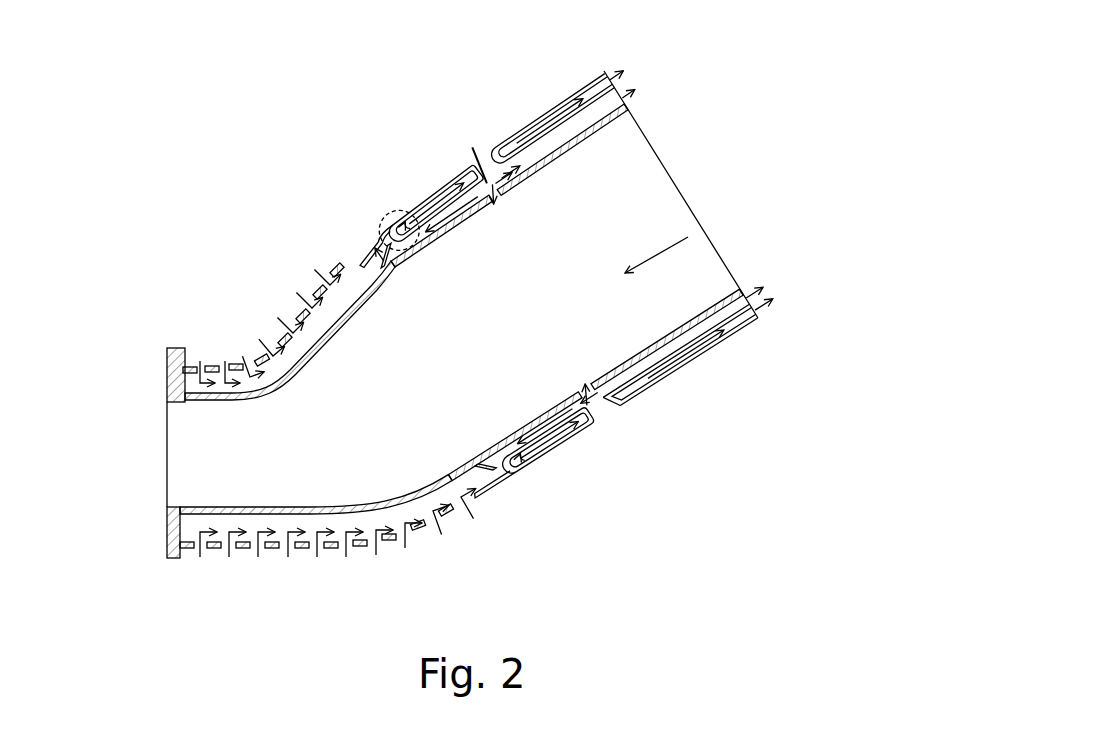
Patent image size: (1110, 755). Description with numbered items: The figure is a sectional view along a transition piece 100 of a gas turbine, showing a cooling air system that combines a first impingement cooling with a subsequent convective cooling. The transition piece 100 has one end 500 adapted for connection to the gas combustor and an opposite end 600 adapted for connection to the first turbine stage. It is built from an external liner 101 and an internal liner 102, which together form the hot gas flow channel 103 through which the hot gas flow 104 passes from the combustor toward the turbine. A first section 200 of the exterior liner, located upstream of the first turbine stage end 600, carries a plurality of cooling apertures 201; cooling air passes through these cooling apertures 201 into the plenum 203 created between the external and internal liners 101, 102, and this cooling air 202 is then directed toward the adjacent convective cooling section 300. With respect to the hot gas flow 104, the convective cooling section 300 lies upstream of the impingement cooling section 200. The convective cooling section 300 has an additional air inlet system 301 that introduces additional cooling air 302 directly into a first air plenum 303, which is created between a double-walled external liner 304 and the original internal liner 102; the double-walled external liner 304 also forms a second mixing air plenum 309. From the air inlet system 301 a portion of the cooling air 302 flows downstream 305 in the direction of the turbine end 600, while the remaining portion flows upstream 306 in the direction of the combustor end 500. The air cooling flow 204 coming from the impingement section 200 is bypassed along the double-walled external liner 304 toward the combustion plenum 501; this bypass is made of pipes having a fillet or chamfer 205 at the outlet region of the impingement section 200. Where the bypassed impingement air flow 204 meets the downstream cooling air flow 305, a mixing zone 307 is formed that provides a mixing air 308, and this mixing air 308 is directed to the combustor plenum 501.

The transition piece 100 is at (195, 240).
The external liner 101 is at (443, 180).
The internal liner 102 is at (553, 164).
The hot gas flow channel 103 is at (516, 339).
The hot gas flow 104 is at (656, 247).
The first section of the exterior liner (impingement cooling section) 200 is at (260, 340).
The cooling apertures 201 is at (292, 552).
The cooling air 202 is at (378, 552).
The plenum 203 is at (313, 322).
The air cooling flow from the impingement section 204 is at (493, 478).
The fillet or chamfer 205 is at (392, 262).
The convective cooling section 300 is at (531, 83).
The additional air inlet system 301 is at (487, 158).
The additional cooling air 302 is at (589, 399).
The first air plenum 303 is at (673, 340).
The double-walled external liner 304 is at (638, 405).
The downstream cooling air flow 305 is at (530, 428).
The upstream cooling air flow 306 is at (643, 352).
The mixing zone 307 is at (390, 215).
The mixing air 308 is at (555, 117).
The second mixing air plenum 309 is at (650, 378).
The combustor end 500 is at (676, 182).
The combustor plenum 501 is at (820, 291).
The turbine end 600 is at (165, 500).